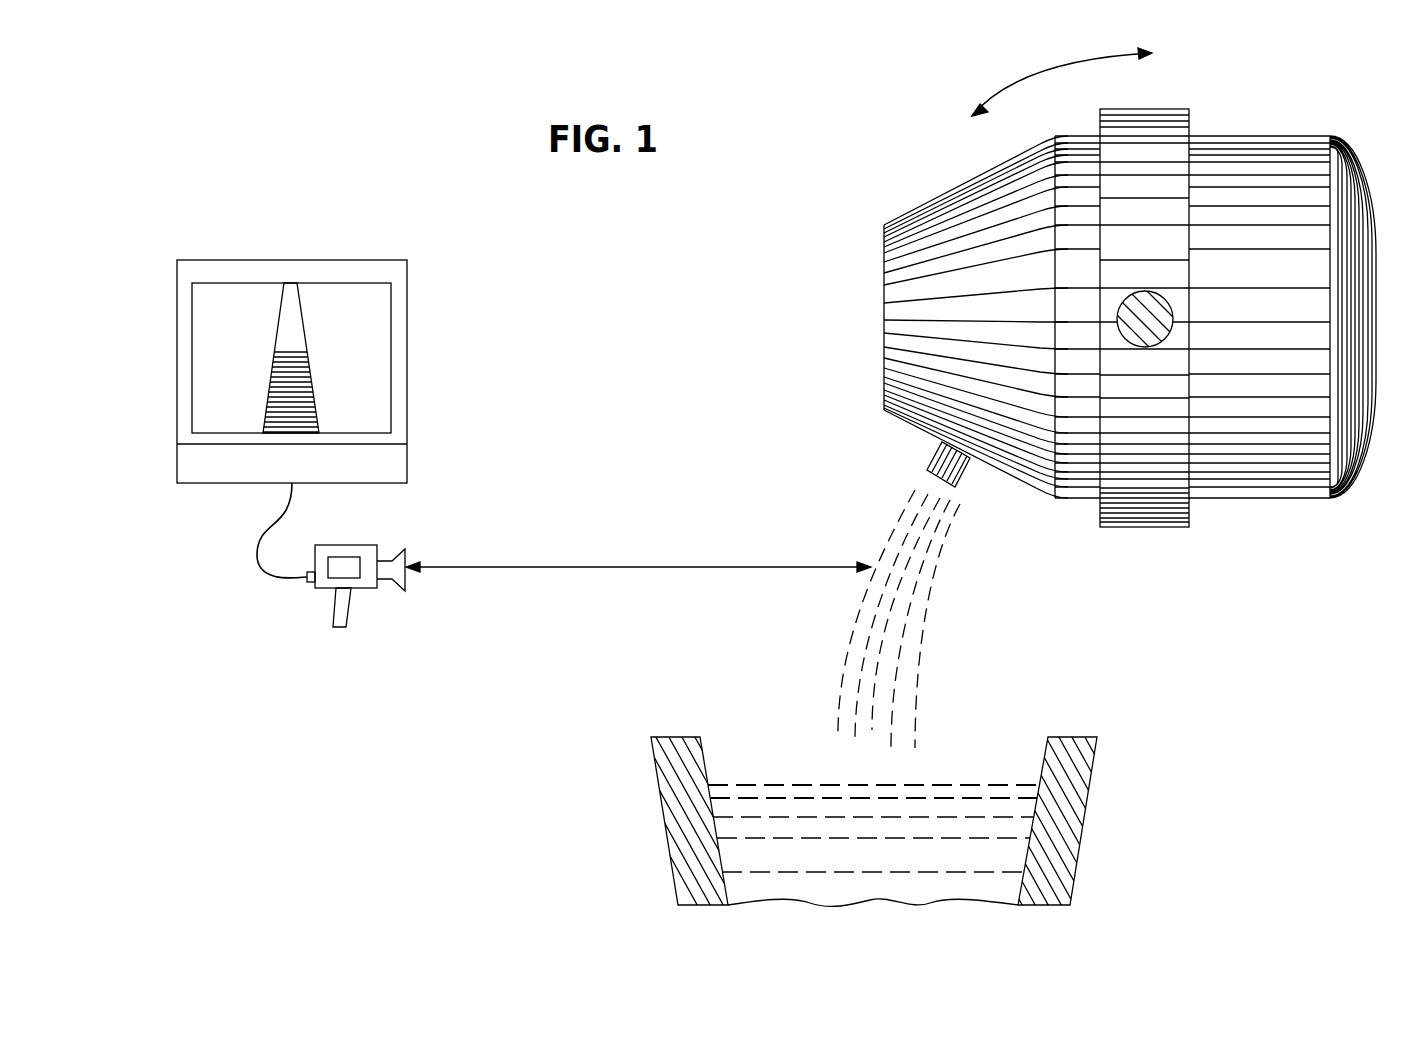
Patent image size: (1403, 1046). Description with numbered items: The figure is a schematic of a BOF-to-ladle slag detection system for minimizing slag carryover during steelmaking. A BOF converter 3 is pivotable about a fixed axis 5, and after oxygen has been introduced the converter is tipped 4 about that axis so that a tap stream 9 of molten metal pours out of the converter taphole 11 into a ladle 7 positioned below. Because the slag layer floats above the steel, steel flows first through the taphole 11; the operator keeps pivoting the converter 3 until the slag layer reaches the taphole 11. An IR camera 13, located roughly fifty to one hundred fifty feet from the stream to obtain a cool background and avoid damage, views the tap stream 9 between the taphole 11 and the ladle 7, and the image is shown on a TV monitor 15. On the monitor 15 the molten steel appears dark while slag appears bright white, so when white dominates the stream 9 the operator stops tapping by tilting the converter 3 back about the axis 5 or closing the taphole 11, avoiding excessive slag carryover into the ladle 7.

The BOF converter 3 is at (1248, 453).
The pivoting or tipping motion 4 is at (1023, 79).
The axis 5 is at (1155, 310).
The ladle 7 is at (1087, 783).
The tap stream 9 is at (893, 663).
The taphole 11 is at (933, 452).
The IR camera 13 is at (370, 584).
The TV monitor 15 is at (410, 325).